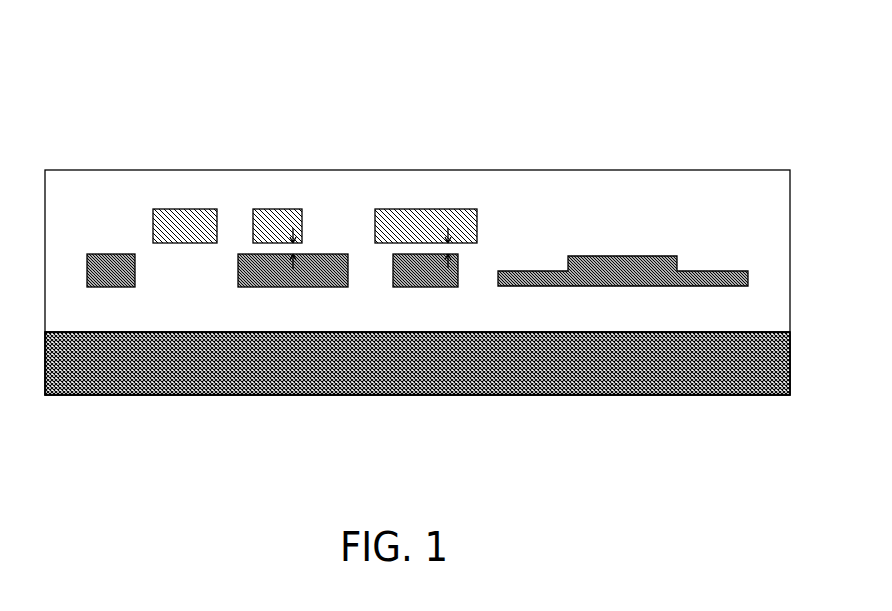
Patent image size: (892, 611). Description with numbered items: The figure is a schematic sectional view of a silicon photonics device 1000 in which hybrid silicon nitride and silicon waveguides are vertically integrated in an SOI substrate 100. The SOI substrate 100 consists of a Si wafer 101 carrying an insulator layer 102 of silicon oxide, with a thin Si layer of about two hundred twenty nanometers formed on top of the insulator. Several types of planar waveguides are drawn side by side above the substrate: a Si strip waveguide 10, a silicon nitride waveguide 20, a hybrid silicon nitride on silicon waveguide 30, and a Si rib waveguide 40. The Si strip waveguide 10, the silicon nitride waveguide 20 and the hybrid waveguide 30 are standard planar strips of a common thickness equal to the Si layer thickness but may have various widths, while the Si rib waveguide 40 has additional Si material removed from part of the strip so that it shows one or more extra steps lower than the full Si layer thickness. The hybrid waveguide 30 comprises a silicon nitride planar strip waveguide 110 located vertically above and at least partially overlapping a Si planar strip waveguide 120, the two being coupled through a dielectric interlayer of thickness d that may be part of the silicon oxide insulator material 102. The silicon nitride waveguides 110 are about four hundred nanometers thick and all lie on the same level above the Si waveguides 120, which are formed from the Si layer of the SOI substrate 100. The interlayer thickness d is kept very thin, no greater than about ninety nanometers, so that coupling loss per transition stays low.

The silicon photonics device 1000 is at (501, 102).
The SOI substrate 100 is at (795, 255).
The Si wafer 101 is at (395, 389).
The insulator layer 102 is at (527, 320).
The silicon nitride waveguide 110 is at (91, 268).
The silicon waveguide 120 is at (156, 226).
The interlayer thickness d is at (298, 251).
The Si strip waveguide 10 is at (143, 292).
The Si3N4 waveguide 20 is at (225, 292).
The hybrid Si3N4/Si waveguide 30 is at (480, 292).
The Si rib waveguide 40 is at (752, 292).